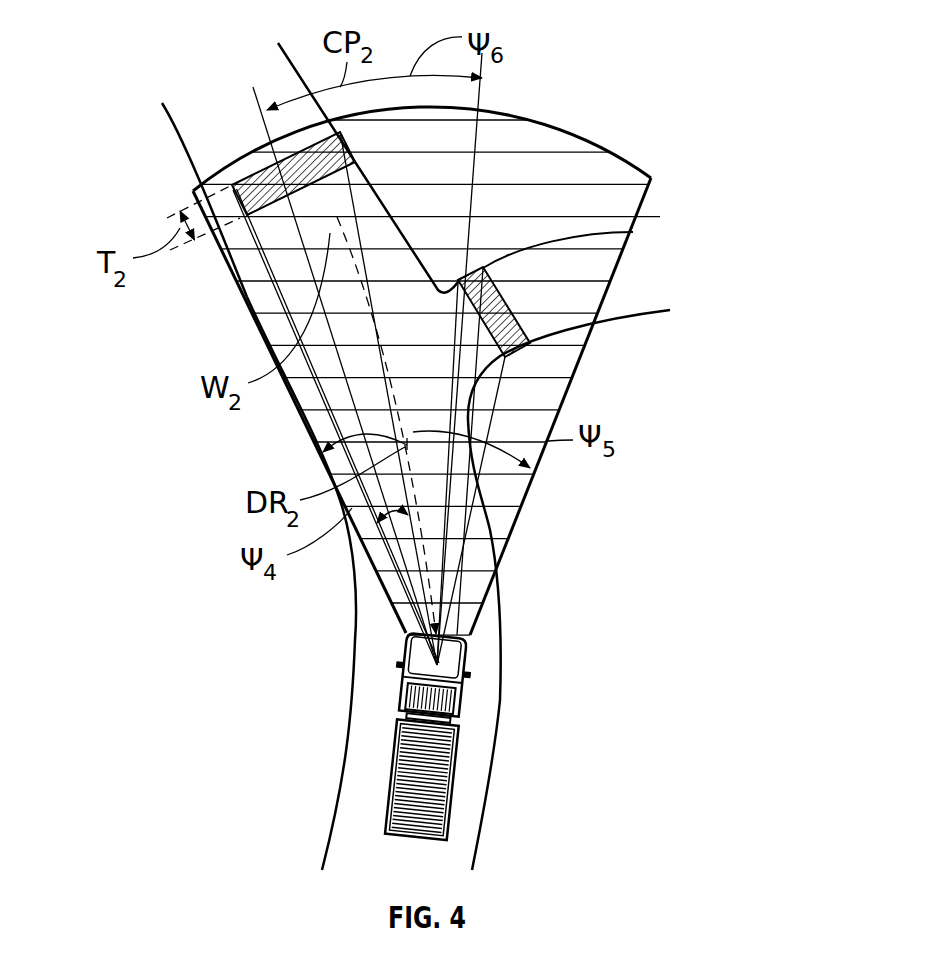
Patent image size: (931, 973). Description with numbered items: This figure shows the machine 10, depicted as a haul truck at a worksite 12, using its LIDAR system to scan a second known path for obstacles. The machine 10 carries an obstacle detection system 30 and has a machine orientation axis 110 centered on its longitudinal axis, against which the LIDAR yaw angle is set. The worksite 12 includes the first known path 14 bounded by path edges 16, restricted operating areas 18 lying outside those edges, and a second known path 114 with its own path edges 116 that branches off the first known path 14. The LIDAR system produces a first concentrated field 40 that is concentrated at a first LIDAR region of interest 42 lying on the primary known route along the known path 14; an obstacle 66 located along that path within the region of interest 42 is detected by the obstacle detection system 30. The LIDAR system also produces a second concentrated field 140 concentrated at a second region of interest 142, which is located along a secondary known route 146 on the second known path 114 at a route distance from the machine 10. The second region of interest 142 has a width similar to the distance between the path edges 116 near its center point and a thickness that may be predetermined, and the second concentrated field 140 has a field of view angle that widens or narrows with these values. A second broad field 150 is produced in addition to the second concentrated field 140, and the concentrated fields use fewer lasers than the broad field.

The machine 10 is at (461, 760).
The worksite 12 is at (623, 362).
The known path 14 is at (458, 818).
The path edges 16 is at (350, 752).
The restricted operating areas 18 is at (527, 712).
The obstacle detection system 30 is at (467, 663).
The concentrated field 40 is at (525, 357).
The LIDAR region of interest 42 is at (513, 313).
The obstacle 66 is at (632, 232).
The machine orientation axis 110 is at (487, 152).
The second known path 114 is at (200, 100).
The path edges 116 is at (176, 127).
The second concentrated field 140 is at (278, 283).
The second region of interest 142 is at (242, 176).
The secondary known route 146 is at (432, 568).
The second broad field 150 is at (500, 533).